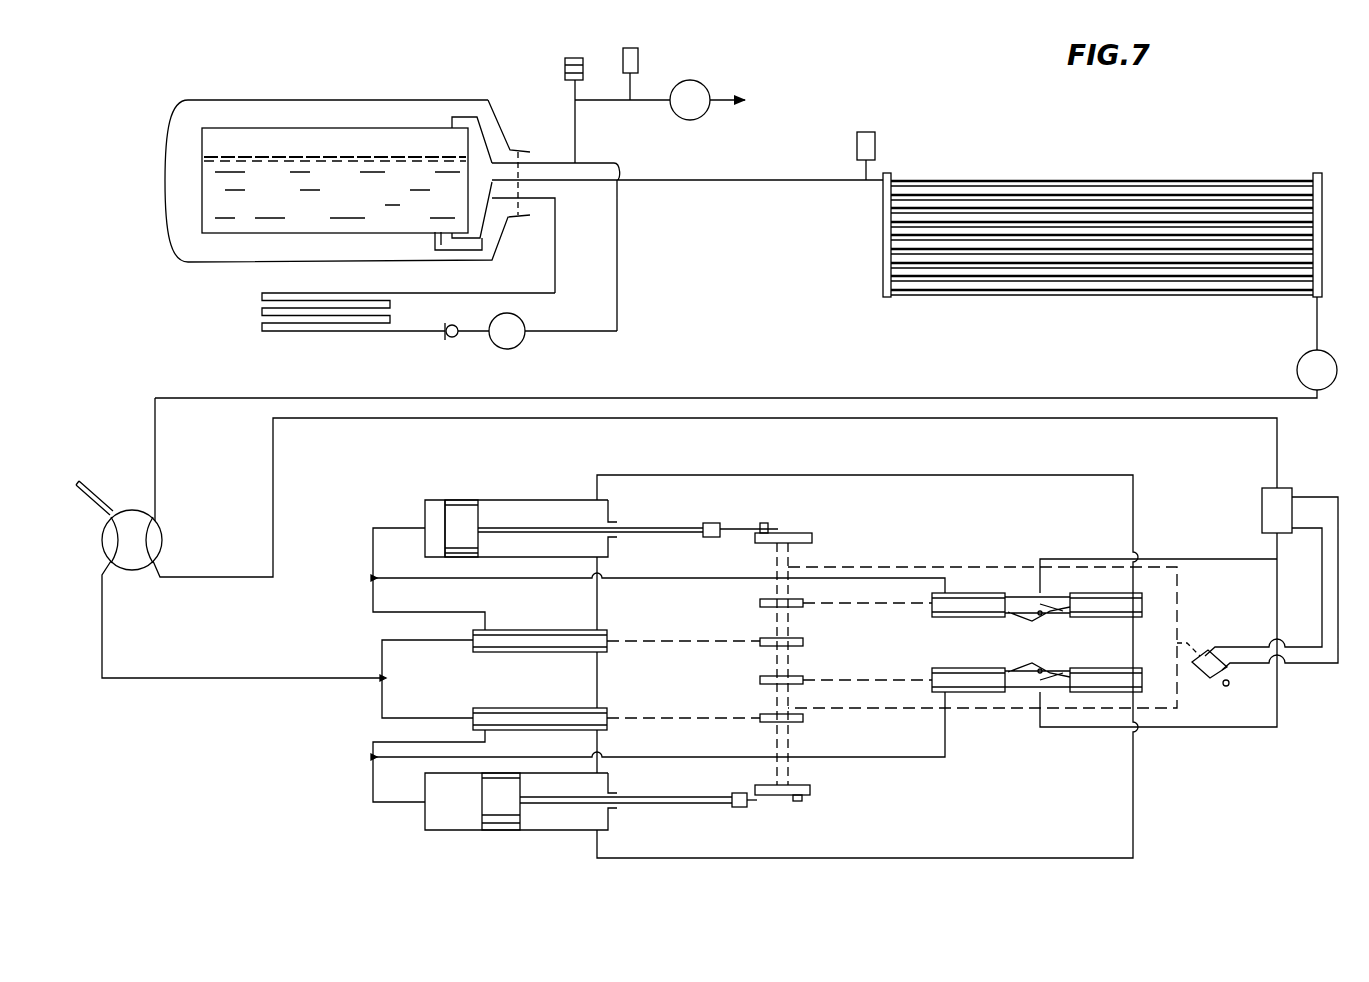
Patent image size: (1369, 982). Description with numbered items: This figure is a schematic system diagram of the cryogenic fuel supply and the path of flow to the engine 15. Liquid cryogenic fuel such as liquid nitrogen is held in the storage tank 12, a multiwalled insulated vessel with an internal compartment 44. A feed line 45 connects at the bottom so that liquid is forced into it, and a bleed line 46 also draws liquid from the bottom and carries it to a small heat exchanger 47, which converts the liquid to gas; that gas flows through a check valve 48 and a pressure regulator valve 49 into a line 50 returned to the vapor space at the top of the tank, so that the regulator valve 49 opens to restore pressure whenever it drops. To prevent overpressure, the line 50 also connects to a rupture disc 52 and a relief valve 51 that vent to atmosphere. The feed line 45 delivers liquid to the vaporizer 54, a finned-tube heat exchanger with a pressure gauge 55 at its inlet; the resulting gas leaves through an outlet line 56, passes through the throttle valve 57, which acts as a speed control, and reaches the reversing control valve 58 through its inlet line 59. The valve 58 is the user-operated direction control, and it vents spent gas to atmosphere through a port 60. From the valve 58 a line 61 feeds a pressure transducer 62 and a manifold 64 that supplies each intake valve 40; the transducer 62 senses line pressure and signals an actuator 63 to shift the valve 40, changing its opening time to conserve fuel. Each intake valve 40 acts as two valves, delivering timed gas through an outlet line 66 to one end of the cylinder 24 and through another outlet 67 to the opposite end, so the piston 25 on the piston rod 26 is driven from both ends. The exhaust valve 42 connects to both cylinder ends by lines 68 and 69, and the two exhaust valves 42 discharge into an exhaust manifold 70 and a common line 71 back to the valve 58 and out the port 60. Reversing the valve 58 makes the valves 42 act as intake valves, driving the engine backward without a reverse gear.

The storage tank 12 is at (312, 100).
The internal compartment 44 is at (247, 128).
The bleed line 46 is at (435, 237).
The feed line 45 is at (723, 182).
The rupture disc 52 is at (565, 68).
The relief valve 51 is at (697, 82).
The pressure gauge 55 is at (866, 132).
The vaporizer 54 is at (891, 174).
The outlet line 56 is at (1318, 320).
The throttle valve 57 is at (1298, 362).
The small heat exchanger 47 is at (262, 293).
The check valve 48 is at (445, 336).
The pressure regulator valve 49 is at (525, 343).
The line 50 is at (617, 283).
The inlet line 59 is at (157, 442).
The reversing control valve 58 is at (162, 535).
The port 60 is at (92, 480).
The line 61 is at (1278, 440).
The common line 71 is at (197, 683).
The pressure transducer 62 is at (1262, 502).
The manifold 64 is at (1278, 702).
The actuator 63 is at (1213, 680).
The outlet line 66 is at (640, 475).
The engine 15 is at (840, 527).
The cylinder 24 is at (536, 500).
The piston 25 is at (462, 505).
The piston rod 26 is at (674, 527).
The outlet 67 is at (400, 578).
The line 69 is at (472, 612).
The line 68 is at (603, 598).
The exhaust manifold 70 is at (384, 688).
The exhaust valve 42 is at (542, 650).
The intake valve 40 is at (978, 590).